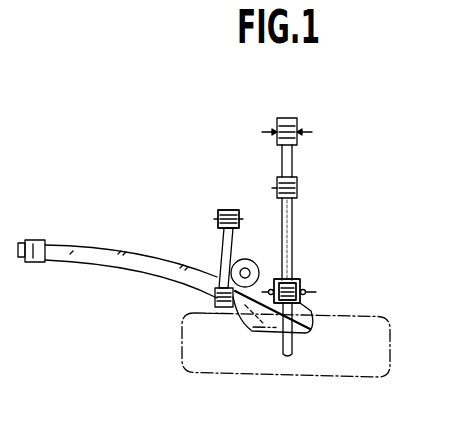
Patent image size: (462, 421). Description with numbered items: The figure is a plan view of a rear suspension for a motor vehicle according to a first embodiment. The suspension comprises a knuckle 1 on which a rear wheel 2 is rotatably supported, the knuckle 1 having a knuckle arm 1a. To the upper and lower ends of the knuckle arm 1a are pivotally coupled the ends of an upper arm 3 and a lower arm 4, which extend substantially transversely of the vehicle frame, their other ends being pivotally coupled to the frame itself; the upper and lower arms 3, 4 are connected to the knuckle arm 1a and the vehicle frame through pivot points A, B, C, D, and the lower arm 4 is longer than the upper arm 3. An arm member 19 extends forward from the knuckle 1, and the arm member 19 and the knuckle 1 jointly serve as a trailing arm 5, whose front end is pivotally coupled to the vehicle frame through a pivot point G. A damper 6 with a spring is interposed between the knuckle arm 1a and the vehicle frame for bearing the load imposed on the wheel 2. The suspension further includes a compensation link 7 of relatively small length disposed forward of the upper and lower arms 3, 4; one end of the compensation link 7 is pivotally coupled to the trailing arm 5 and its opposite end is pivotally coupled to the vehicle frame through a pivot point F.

The knuckle 1 is at (308, 315).
The knuckle arm 1a is at (284, 284).
The rear wheel 2 is at (212, 352).
The upper arm 3 is at (292, 232).
The lower arm 4 is at (289, 162).
The trailing arm 5 is at (136, 247).
The damper 6 is at (248, 262).
The compensation link 7 is at (223, 260).
The arm member 19 is at (117, 262).
The pivot point A is at (306, 294).
The pivot point B is at (297, 188).
The pivot point C is at (341, 284).
The pivot point D is at (286, 118).
The pivot point F is at (226, 210).
The pivot point G is at (36, 253).